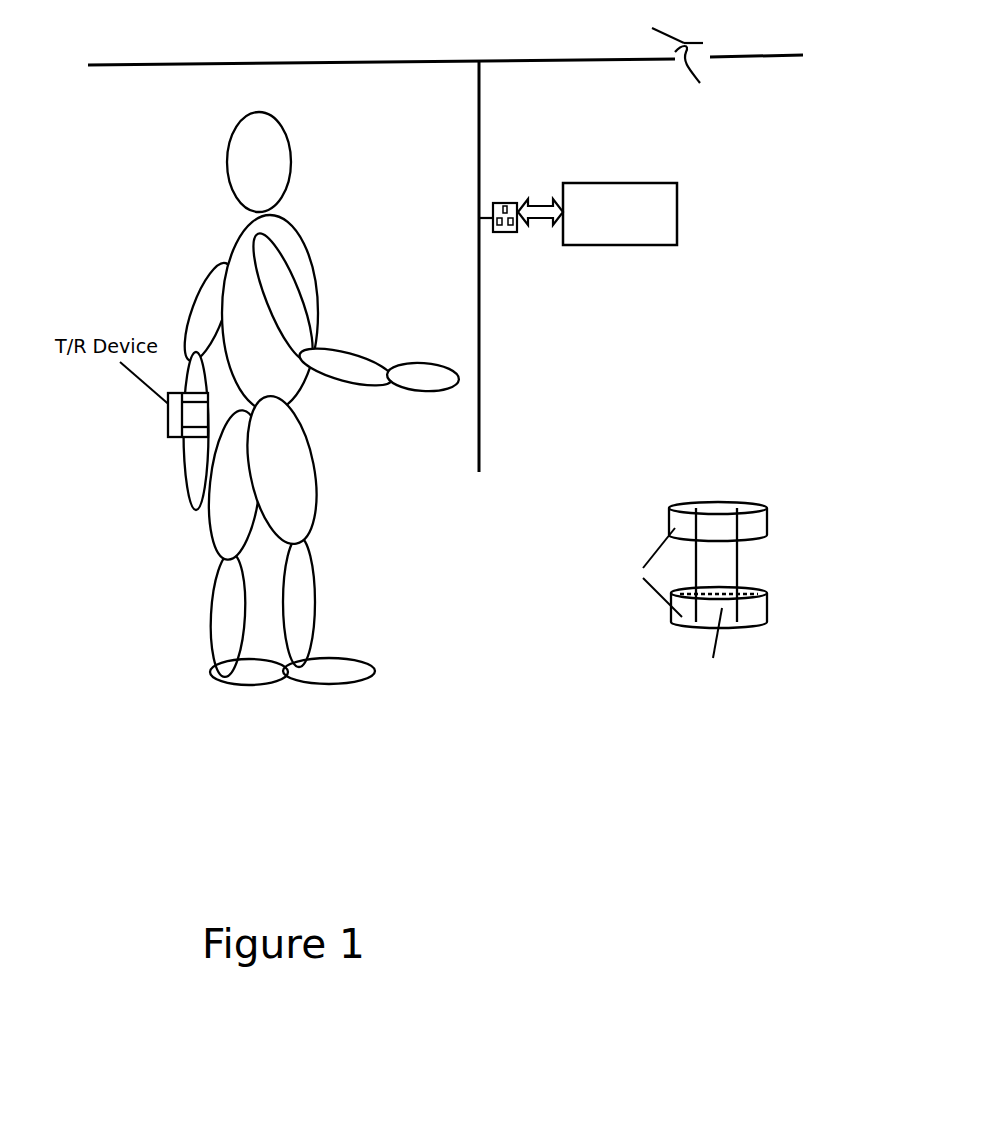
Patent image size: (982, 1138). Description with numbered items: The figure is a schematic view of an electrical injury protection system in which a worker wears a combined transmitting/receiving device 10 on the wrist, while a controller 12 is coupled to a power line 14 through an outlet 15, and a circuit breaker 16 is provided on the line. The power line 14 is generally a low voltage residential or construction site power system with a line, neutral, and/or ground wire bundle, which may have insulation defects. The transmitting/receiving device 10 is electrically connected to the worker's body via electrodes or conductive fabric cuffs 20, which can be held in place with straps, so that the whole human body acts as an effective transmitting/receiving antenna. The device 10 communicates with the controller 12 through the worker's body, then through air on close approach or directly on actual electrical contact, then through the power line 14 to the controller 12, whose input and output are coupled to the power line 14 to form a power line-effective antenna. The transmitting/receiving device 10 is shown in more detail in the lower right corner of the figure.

The combined transmitting/receiving device 10 is at (168, 433).
The controller 12 is at (677, 207).
The power line 14 is at (480, 330).
The outlet 15 is at (502, 203).
The circuit breaker 16 is at (445, 58).
The electrodes 20 is at (760, 522).